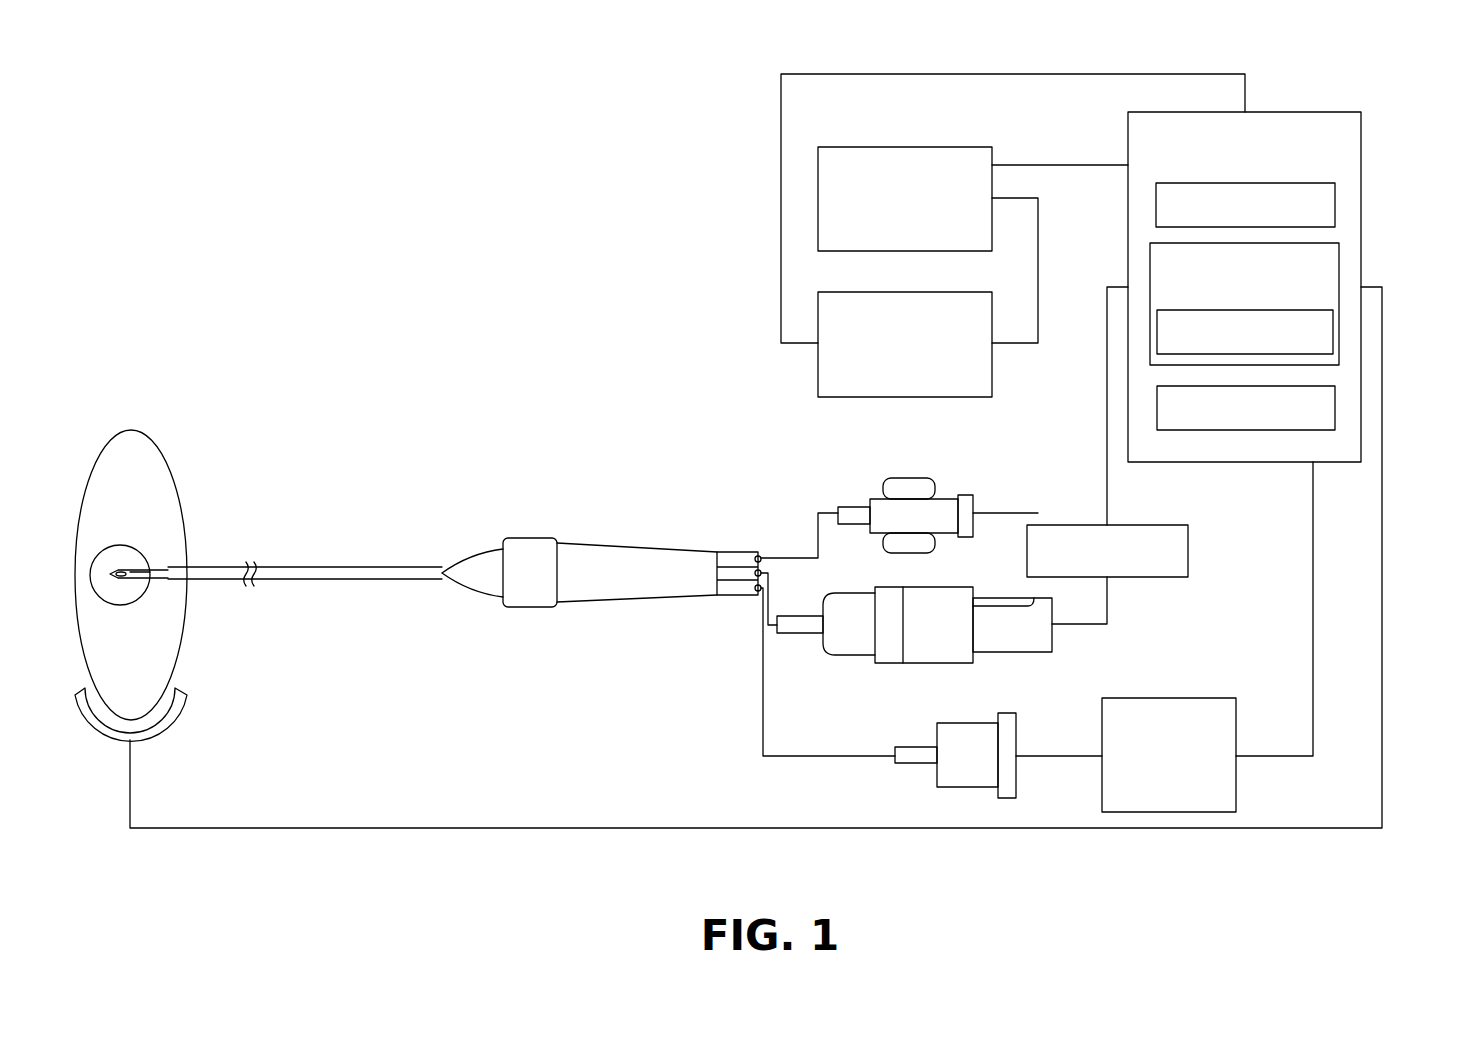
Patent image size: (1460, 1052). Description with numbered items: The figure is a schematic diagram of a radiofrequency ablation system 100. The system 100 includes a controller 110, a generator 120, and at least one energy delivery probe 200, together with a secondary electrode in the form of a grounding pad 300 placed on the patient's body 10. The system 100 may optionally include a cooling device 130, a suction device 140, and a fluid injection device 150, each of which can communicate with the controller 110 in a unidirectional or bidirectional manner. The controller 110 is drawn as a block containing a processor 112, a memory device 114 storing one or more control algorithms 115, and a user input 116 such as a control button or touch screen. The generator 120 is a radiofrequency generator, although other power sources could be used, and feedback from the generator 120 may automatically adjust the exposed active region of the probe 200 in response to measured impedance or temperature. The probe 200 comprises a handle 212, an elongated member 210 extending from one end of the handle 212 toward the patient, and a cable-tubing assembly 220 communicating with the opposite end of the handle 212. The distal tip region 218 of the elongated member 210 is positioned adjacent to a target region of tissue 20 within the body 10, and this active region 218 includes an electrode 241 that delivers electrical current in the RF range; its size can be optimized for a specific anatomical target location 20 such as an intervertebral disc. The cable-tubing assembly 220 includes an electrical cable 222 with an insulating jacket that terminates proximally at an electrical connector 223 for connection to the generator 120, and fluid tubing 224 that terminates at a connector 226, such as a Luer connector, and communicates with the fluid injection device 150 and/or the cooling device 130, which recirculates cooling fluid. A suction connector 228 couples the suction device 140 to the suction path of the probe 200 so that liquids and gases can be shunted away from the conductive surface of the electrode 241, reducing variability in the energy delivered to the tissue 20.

The patient's body 10 is at (130, 430).
The target region of tissue 20 is at (118, 606).
The system 100 is at (650, 156).
The controller 110 is at (1299, 112).
The processor 112 is at (1335, 200).
The memory device 114 is at (1339, 259).
The control algorithms 115 is at (1333, 327).
The user input 116 is at (1335, 402).
The generator 120 is at (1188, 547).
The cooling device 130 is at (992, 227).
The suction device 140 is at (1165, 698).
The fluid injection device 150 is at (992, 307).
The energy delivery probe 200 is at (537, 404).
The elongated member 210 is at (350, 564).
The handle 212 is at (583, 538).
The distal tip region 218 is at (125, 560).
The cable-tubing assembly 220 is at (739, 552).
The electrical cable 222 is at (797, 633).
The electrical connector 223 is at (887, 663).
The fluid tubing 224 is at (846, 505).
The connector 226 is at (912, 478).
The suction connector 228 is at (975, 745).
The electrode 241 is at (145, 586).
The grounding pad 300 is at (157, 740).